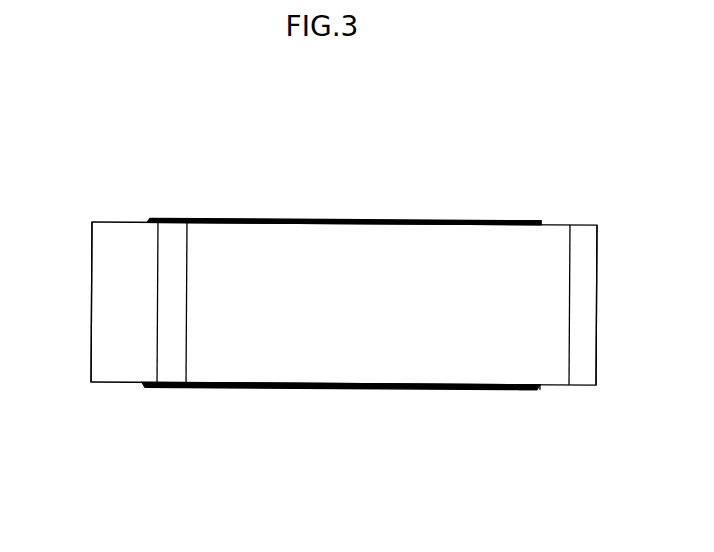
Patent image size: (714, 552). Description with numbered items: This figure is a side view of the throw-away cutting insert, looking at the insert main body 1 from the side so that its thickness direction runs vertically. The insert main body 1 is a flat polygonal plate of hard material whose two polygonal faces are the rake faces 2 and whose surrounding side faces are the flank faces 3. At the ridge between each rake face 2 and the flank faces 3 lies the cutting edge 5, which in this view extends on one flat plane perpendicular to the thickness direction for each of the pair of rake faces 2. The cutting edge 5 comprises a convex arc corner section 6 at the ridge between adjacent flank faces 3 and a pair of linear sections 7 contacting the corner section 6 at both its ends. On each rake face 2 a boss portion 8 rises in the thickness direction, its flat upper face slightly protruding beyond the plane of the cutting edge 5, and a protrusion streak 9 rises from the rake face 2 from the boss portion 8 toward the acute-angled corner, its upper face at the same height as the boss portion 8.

The insert main body 1 is at (259, 176).
The rake face 2 is at (524, 212).
The flank face 3 is at (108, 325).
The cutting edge 5 is at (347, 314).
The corner section 6 is at (92, 222).
The linear section 7 is at (105, 222).
The boss portion 8 is at (430, 219).
The protrusion streak 9 is at (542, 221).